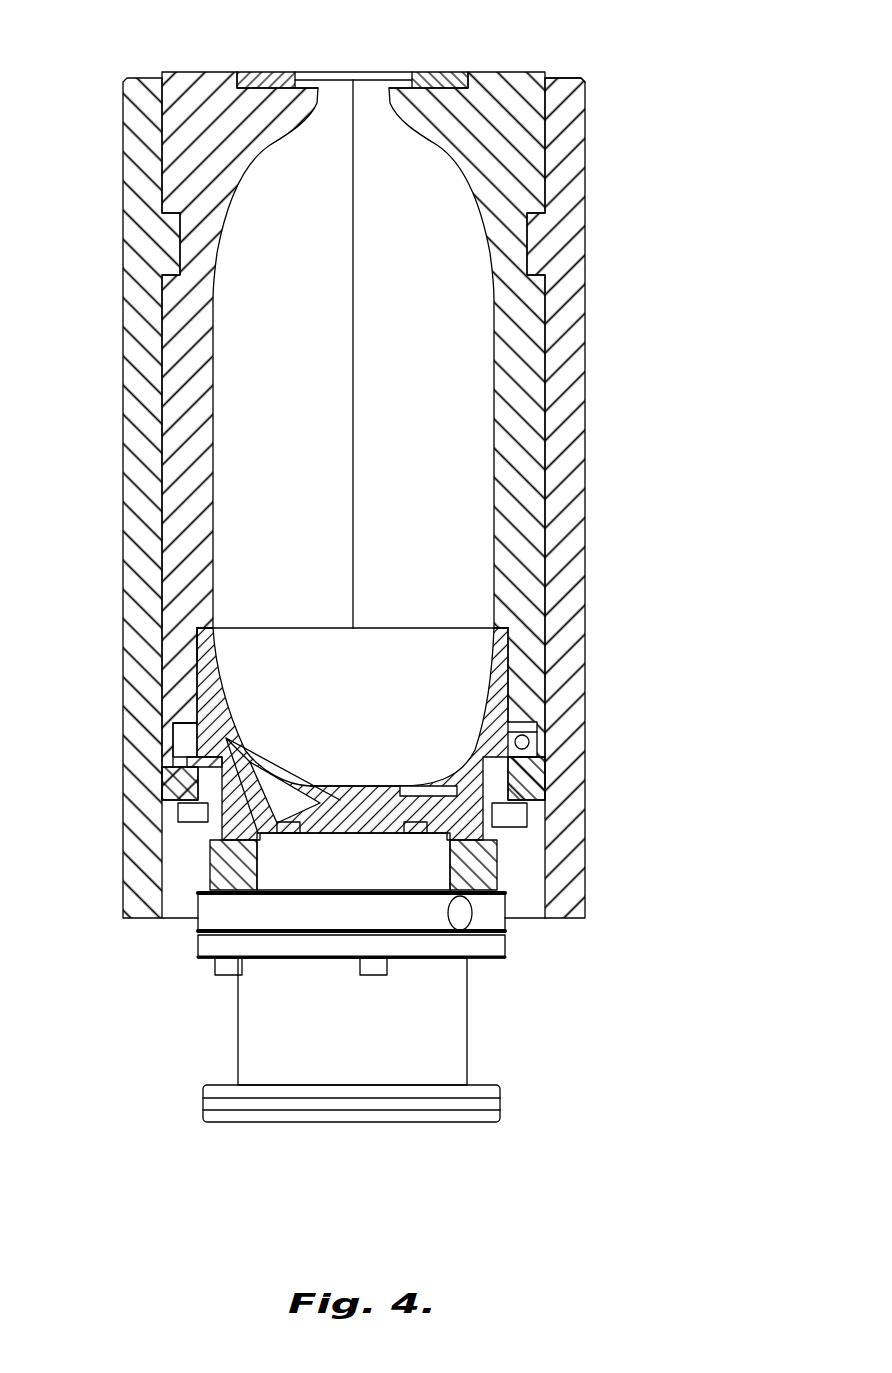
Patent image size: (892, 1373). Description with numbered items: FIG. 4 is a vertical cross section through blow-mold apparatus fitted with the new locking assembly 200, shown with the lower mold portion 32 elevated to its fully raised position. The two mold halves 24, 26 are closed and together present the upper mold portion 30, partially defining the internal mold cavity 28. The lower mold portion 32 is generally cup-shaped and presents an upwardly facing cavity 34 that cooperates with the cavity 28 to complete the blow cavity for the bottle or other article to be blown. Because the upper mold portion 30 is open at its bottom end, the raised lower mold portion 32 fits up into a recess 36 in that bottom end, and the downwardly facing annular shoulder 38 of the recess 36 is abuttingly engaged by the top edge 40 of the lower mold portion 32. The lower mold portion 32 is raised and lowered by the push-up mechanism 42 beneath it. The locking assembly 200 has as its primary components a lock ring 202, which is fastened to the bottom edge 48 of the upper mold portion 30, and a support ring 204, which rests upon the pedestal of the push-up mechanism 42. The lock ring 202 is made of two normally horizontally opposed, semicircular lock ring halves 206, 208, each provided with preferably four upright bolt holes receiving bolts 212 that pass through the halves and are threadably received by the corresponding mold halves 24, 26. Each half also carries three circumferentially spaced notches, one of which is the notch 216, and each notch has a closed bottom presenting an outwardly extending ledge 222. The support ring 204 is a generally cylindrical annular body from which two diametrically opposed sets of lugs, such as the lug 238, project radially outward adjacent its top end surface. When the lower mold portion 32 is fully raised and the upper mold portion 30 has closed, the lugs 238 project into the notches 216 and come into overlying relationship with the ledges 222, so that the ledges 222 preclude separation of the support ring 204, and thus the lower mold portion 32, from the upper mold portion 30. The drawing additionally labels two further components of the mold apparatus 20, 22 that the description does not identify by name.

The housing 20 is at (133, 433).
The housing side wall 22 is at (565, 472).
The mold half 24 is at (213, 94).
The mold half 26 is at (483, 80).
The internal mold cavity 28 is at (470, 372).
The upper mold portion 30 is at (518, 58).
The lower mold portion 32 is at (408, 622).
The upwardly facing cavity 34 is at (335, 640).
The recess 36 is at (197, 642).
The annular shoulder 38 is at (210, 633).
The top edge 40 is at (498, 628).
The push-up mechanism 42 is at (475, 1037).
The bottom edge 48 is at (527, 728).
The locking assembly 200 is at (336, 823).
The lock ring 202 is at (166, 760).
The support ring 204 is at (510, 868).
The lock ring half 206 is at (512, 757).
The lock ring half 208 is at (178, 724).
The bolt 212 is at (515, 820).
The notch 216 is at (185, 739).
The ledge 222 is at (180, 795).
The lug 238 is at (236, 752).